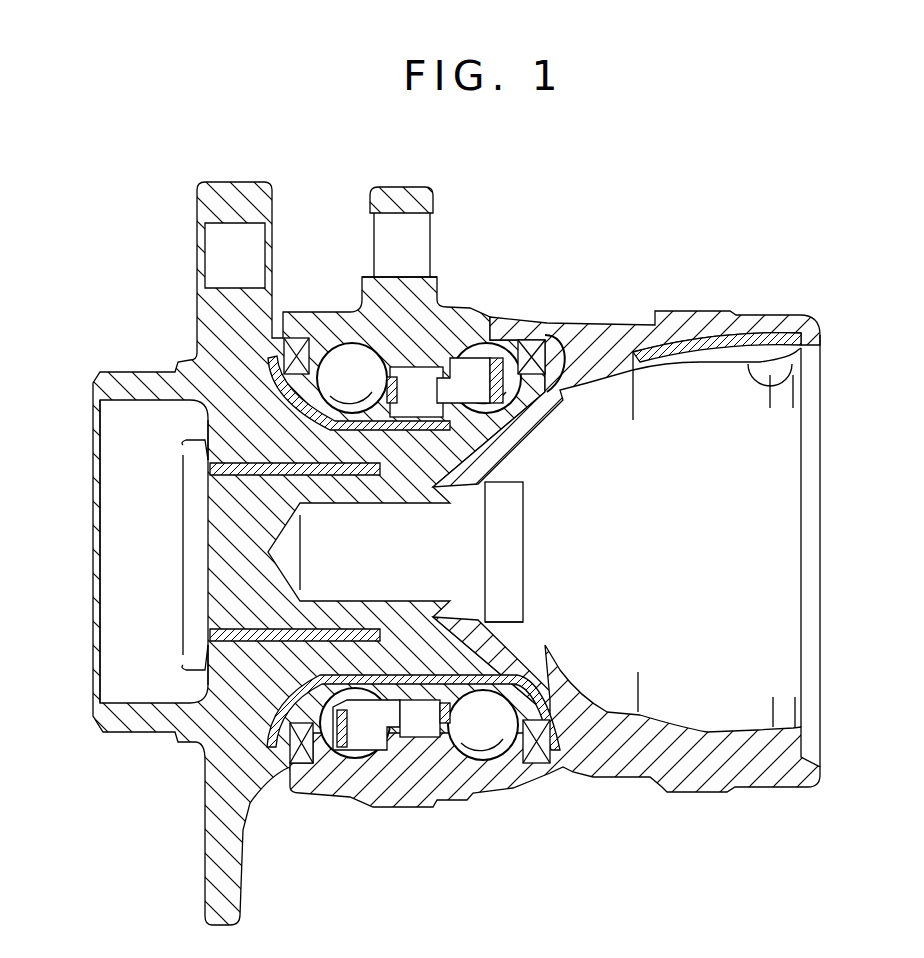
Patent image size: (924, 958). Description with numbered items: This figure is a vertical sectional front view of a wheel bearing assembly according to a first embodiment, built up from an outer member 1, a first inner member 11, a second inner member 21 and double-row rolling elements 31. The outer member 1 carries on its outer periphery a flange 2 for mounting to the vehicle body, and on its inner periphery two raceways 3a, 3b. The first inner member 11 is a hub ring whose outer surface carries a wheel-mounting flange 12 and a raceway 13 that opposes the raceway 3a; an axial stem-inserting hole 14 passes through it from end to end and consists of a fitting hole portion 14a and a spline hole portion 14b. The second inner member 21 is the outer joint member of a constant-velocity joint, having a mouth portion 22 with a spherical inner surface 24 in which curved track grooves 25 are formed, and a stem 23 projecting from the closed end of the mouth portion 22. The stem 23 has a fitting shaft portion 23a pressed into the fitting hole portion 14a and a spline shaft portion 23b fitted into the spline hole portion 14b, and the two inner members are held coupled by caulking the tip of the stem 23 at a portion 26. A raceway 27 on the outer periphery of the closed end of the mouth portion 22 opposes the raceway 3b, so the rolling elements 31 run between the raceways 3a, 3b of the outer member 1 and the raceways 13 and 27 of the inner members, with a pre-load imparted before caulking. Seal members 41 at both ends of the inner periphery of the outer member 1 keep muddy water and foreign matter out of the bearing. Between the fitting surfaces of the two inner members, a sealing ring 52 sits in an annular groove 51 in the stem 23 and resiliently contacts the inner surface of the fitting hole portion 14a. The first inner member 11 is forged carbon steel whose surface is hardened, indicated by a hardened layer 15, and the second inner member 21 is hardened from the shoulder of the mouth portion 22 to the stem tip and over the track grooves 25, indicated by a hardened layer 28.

The outer member 1 is at (442, 266).
The flange 2 is at (410, 190).
The raceway 3a is at (328, 346).
The raceway 3b is at (479, 344).
The first inner member 11 is at (194, 207).
The wheel-mounting flange 12 is at (222, 185).
The raceway 13 is at (340, 397).
The stem-inserting hole 14 is at (205, 481).
The fitting hole portion 14a is at (395, 463).
The spline hole portion 14b is at (186, 530).
The hardened layer 15 is at (262, 373).
The second inner member 21 is at (604, 322).
The mouth portion 22 is at (688, 308).
The stem 23 is at (195, 558).
The fitting shaft portion 23a is at (428, 485).
The spline shaft portion 23b is at (313, 492).
The spherical inner surface 24 is at (775, 390).
The track grooves 25 is at (742, 350).
The caulked portion 26 is at (190, 462).
The raceway 27 is at (545, 668).
The hardened layer 28 is at (200, 605).
The rolling elements 31 is at (352, 356).
The seal members 41 is at (297, 352).
The annular groove 51 is at (428, 487).
The sealing ring 52 is at (452, 600).